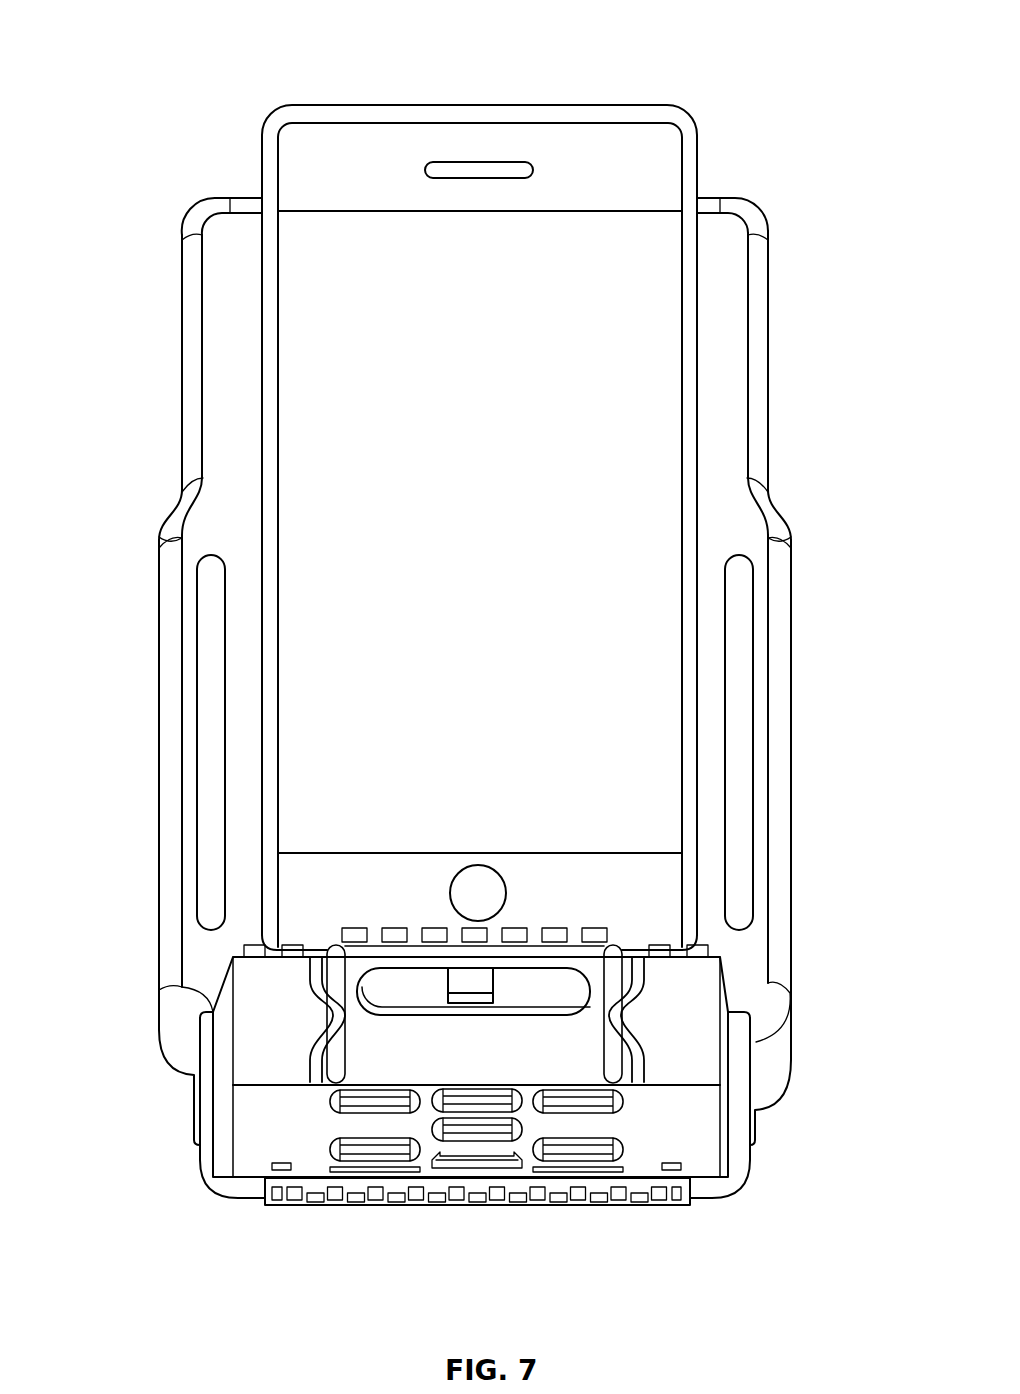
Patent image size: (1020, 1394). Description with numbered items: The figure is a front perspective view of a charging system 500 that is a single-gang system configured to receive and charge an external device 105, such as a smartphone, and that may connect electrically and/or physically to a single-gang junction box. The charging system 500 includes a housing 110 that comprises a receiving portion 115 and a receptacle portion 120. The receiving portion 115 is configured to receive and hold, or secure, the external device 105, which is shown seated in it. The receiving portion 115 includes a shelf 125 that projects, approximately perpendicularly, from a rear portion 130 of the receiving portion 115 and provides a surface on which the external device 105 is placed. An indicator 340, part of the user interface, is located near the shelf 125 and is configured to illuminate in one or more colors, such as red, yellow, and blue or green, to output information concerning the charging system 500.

The charging system 500 is at (163, 43).
The external device 105 is at (626, 105).
The housing 110 is at (742, 200).
The receiving portion 115 is at (808, 356).
The receptacle portion 120 is at (130, 549).
The shelf 125 is at (250, 1220).
The rear portion 130 is at (817, 791).
The indicator 340 is at (477, 1003).